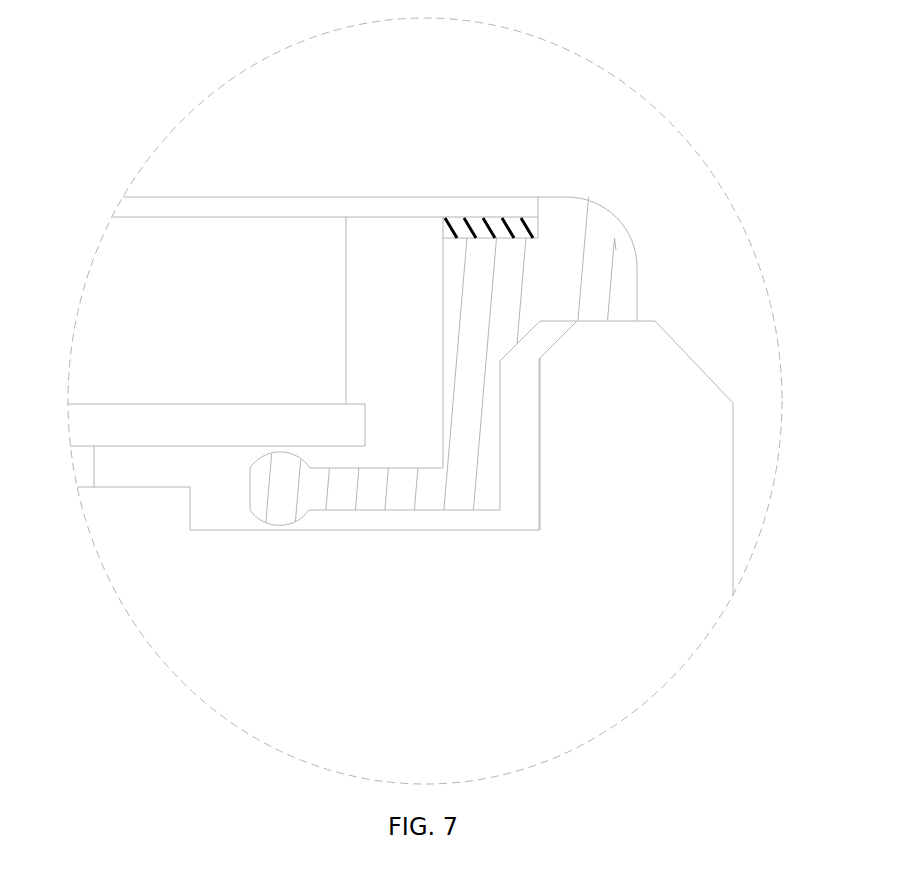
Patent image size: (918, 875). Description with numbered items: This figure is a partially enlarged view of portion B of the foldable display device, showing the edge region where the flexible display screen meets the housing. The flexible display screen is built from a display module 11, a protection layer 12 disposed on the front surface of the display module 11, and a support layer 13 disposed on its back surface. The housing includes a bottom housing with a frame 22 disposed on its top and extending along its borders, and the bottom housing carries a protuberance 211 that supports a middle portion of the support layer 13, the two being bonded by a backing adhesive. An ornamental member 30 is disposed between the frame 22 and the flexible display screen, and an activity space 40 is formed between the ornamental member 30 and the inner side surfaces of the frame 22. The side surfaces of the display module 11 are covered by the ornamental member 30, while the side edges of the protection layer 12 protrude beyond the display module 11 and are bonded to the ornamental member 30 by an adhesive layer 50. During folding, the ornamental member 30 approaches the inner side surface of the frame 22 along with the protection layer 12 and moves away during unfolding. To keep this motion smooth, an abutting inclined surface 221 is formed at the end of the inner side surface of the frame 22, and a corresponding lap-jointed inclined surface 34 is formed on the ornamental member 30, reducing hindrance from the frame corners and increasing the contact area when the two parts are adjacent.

The display module 11 is at (122, 308).
The protection layer 12 is at (154, 207).
The support layer 13 is at (103, 415).
The protuberance 211 is at (190, 516).
The frame 22 is at (663, 362).
The abutting inclined surface 221 is at (562, 337).
The ornamental member 30 is at (595, 225).
The lap-jointed inclined surface 34 is at (525, 340).
The activity space 40 is at (530, 435).
The adhesive layer 50 is at (463, 238).
The portion B is at (655, 695).